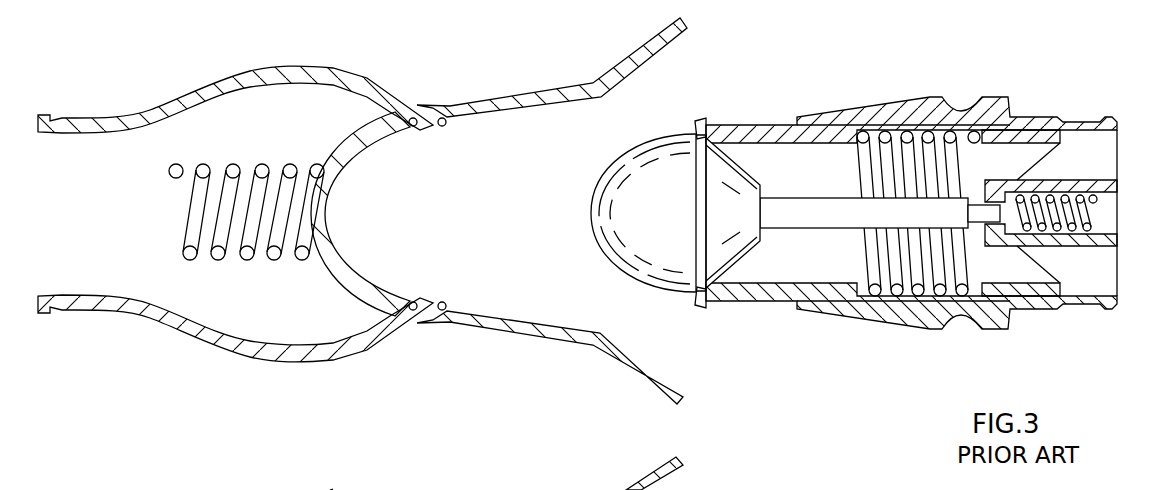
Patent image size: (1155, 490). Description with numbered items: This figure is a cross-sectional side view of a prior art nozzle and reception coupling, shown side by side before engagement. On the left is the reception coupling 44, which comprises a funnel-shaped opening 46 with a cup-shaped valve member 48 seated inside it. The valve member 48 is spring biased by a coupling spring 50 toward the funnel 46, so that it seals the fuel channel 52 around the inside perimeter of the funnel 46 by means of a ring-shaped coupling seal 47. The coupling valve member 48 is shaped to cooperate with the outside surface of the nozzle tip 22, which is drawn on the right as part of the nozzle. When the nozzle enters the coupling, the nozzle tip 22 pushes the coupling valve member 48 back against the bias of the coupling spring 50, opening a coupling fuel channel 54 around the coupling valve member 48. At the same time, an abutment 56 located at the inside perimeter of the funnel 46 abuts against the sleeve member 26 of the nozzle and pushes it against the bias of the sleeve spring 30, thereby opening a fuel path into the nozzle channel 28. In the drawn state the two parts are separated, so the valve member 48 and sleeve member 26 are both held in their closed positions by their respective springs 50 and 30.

The nozzle tip 22 is at (652, 190).
The sleeve member 26 is at (757, 130).
The nozzle channel 28 is at (1010, 162).
The sleeve spring 30 is at (940, 272).
The reception coupling 44 is at (165, 95).
The funnel-shaped opening 46 is at (547, 97).
The ring-shaped coupling seal 47 is at (397, 325).
The cup-shaped valve member 48 is at (365, 143).
The coupling spring 50 is at (235, 170).
The fuel channel 52 is at (107, 216).
The coupling fuel channel 54 is at (330, 489).
The abutment 56 is at (447, 118).